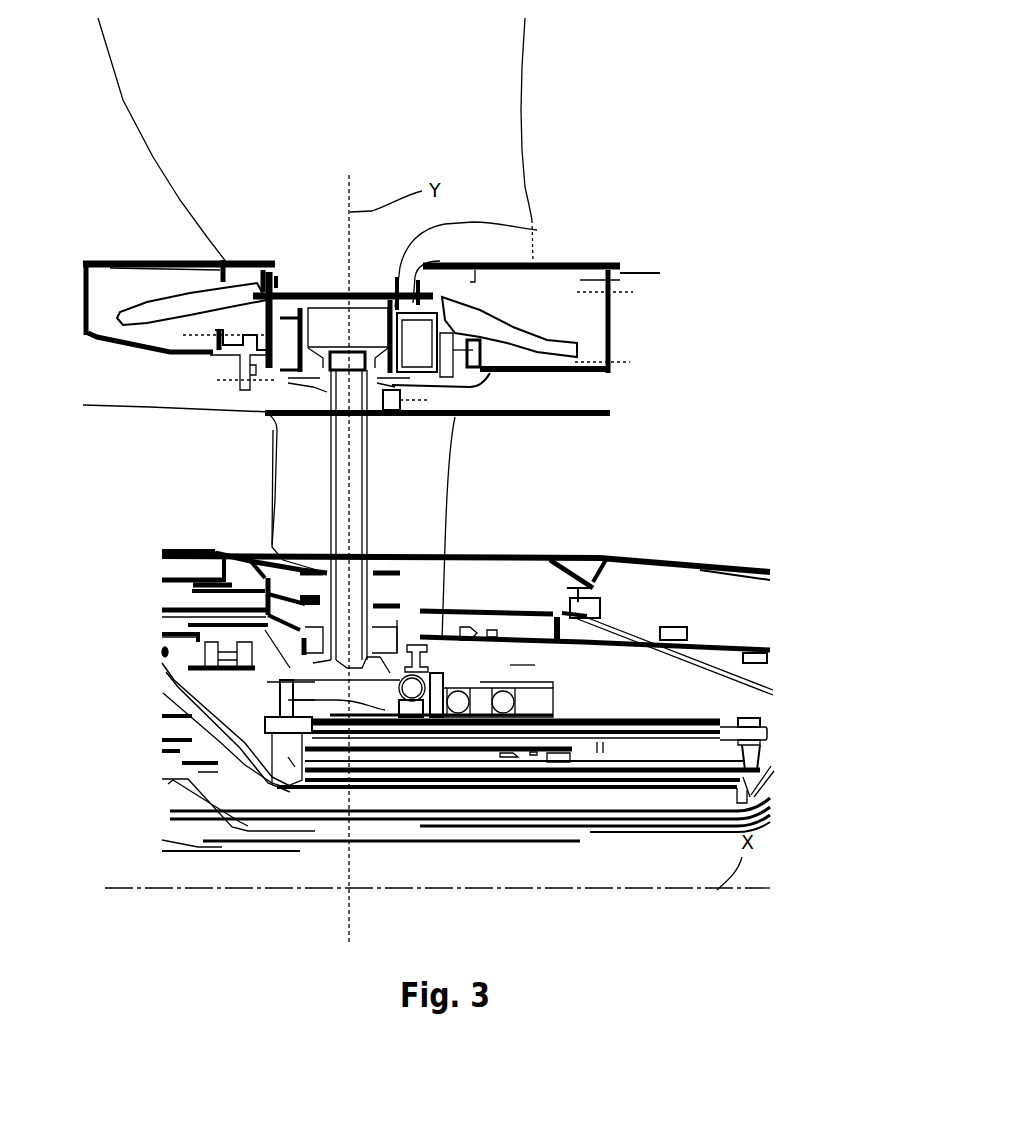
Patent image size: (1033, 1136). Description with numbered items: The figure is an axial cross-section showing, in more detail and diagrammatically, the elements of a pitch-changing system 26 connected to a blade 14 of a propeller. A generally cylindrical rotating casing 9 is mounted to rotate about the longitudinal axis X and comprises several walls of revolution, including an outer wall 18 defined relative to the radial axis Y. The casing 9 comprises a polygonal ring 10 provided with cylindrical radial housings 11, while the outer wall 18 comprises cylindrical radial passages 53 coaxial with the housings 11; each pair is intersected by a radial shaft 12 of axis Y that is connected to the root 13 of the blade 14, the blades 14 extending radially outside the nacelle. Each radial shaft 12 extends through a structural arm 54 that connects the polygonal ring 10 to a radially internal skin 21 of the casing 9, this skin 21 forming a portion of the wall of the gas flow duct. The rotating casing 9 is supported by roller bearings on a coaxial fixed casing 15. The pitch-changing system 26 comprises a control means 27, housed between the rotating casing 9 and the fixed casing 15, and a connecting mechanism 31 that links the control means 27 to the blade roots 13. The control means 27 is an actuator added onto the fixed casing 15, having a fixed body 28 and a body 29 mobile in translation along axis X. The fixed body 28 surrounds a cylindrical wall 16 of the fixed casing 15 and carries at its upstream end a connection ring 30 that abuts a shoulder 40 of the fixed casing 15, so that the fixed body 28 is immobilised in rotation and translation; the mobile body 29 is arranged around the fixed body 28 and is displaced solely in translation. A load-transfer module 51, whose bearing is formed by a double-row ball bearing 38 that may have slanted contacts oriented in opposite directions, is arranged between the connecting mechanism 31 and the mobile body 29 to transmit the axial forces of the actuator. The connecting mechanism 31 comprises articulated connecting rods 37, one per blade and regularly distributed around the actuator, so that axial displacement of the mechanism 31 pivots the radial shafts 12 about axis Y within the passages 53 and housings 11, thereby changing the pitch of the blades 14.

The rotating casing 9 is at (777, 678).
The polygonal ring 10 is at (613, 323).
The radial housing 11 is at (567, 310).
The radial shaft 12 is at (373, 455).
The root of a blade 13 is at (537, 230).
The blade 14 is at (478, 107).
The fixed casing 15 is at (262, 788).
The cylindrical wall 16 is at (627, 790).
The outer wall 18 is at (695, 668).
The radially internal skin 21 is at (198, 547).
The pitch-changing system 26 is at (567, 703).
The control means 27 is at (775, 754).
The fixed body 28 is at (447, 770).
The mobile body 29 is at (593, 717).
The connection ring 30 is at (328, 760).
The connecting mechanism 31 is at (372, 705).
The connecting rod 37 is at (336, 745).
The double-row ball bearing 38 is at (662, 775).
The shoulder 40 is at (297, 760).
The load-transfer module 51 is at (522, 667).
The radial passage 53 is at (447, 532).
The structural arm 54 is at (287, 488).